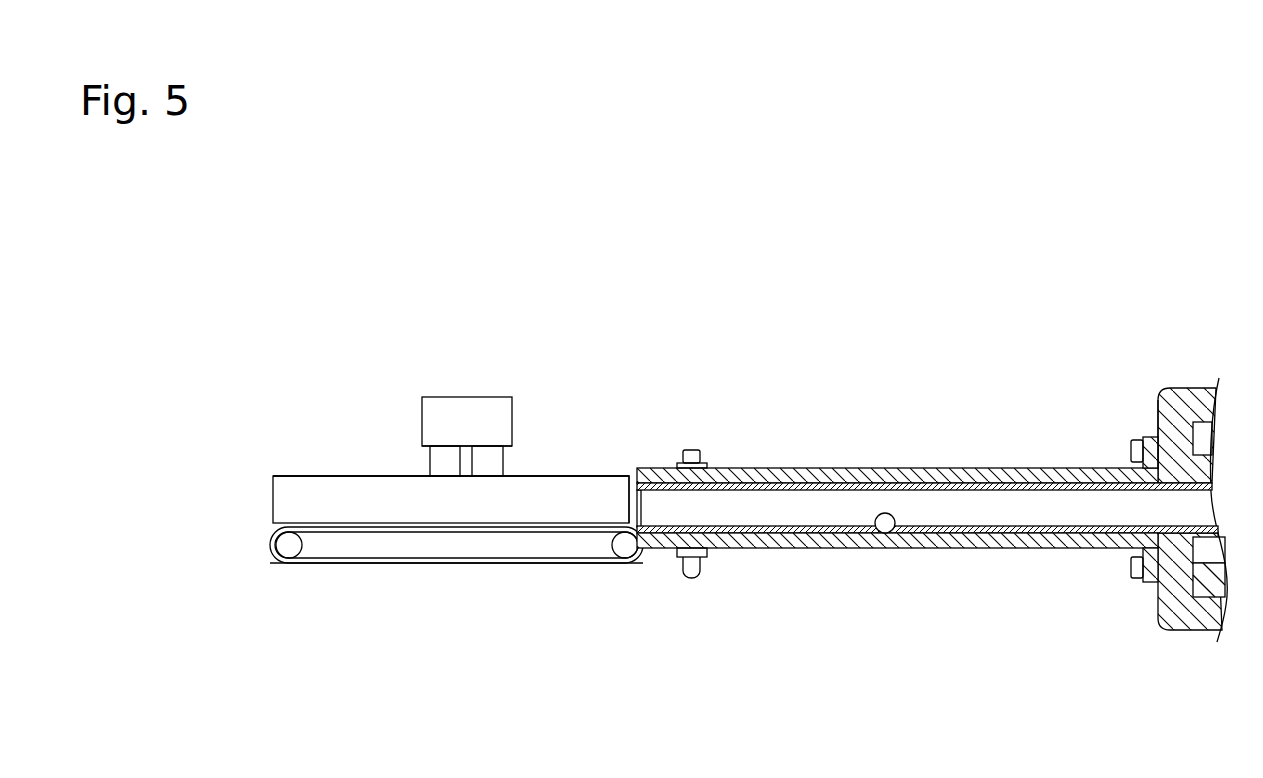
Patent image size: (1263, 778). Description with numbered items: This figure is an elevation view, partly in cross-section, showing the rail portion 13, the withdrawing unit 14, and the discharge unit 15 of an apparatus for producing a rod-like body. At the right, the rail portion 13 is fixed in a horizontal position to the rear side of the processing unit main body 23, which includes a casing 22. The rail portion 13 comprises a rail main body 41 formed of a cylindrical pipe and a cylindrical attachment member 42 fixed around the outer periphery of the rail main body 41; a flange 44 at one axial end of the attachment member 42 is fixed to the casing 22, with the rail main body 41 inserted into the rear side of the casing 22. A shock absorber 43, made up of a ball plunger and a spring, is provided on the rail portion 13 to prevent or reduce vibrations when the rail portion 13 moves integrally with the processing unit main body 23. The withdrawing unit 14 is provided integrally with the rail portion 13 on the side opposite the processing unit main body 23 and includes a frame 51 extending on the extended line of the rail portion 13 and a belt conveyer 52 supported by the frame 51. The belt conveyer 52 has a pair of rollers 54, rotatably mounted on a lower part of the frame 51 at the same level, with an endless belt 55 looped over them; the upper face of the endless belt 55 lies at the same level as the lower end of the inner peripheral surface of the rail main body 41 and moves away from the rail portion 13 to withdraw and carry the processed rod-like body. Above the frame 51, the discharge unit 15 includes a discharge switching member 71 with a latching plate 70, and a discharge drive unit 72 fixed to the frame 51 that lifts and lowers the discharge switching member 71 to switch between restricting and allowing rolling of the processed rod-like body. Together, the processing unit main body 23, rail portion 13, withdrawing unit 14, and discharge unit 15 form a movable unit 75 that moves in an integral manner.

The rail portion 13 is at (992, 460).
The withdrawing unit 14 is at (405, 454).
The discharge unit 15 is at (529, 437).
The casing 22 is at (1183, 618).
The processing unit main body 23 is at (1180, 405).
The rail main body 41 is at (890, 533).
The attachment member 42 is at (945, 550).
The shock absorber 43 is at (690, 448).
The flange 44 is at (1150, 585).
The frame 51 is at (495, 462).
The belt conveyer 52 is at (411, 572).
The roller 54 is at (292, 545).
The endless belt 55 is at (360, 563).
The latching plate 70 is at (370, 495).
The discharge switching member 71 is at (318, 468).
The discharge drive unit 72 is at (468, 420).
The movable unit 75 is at (1125, 392).